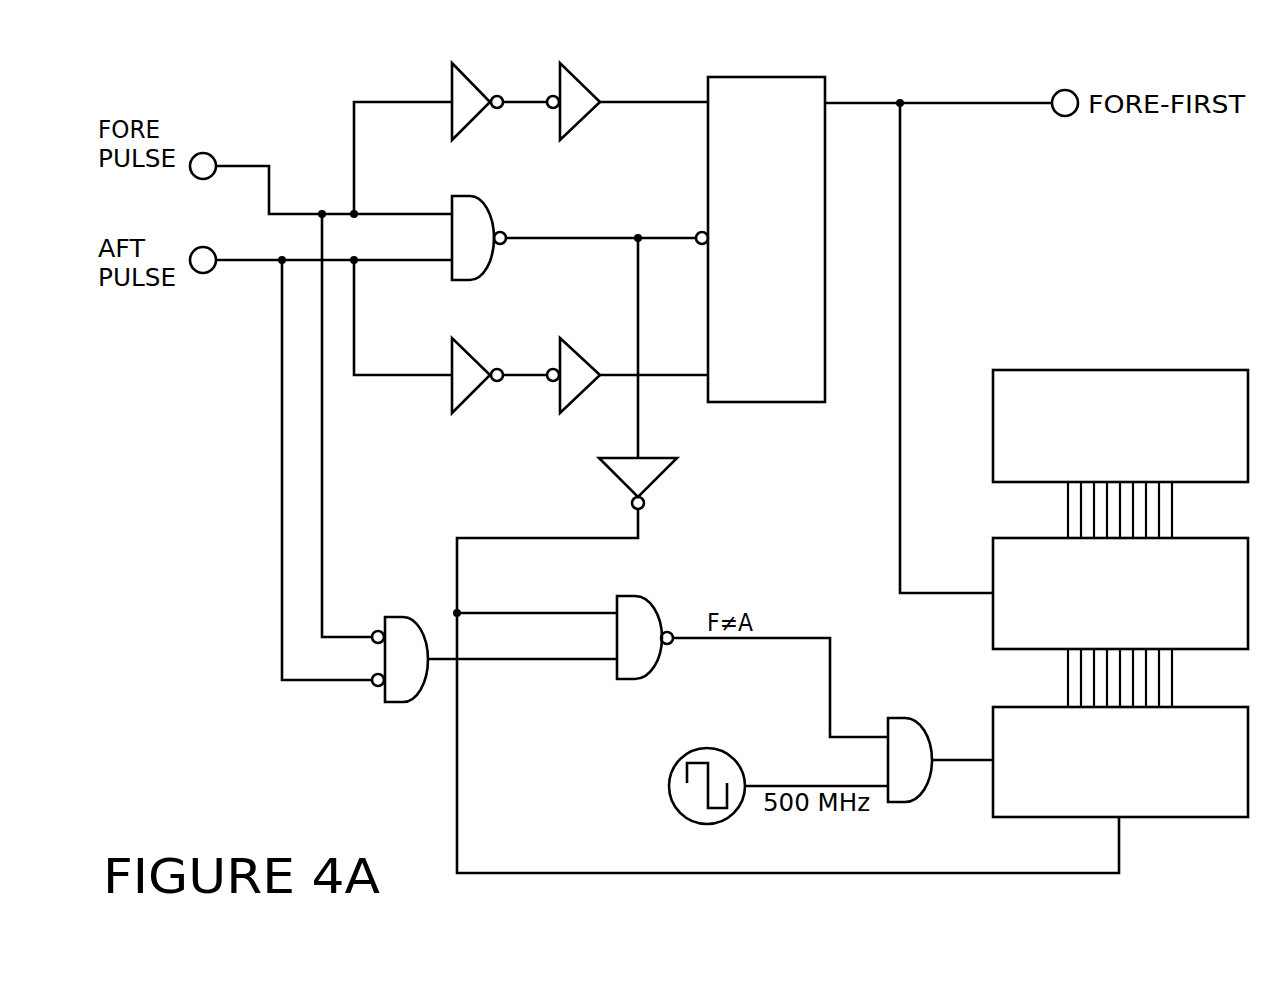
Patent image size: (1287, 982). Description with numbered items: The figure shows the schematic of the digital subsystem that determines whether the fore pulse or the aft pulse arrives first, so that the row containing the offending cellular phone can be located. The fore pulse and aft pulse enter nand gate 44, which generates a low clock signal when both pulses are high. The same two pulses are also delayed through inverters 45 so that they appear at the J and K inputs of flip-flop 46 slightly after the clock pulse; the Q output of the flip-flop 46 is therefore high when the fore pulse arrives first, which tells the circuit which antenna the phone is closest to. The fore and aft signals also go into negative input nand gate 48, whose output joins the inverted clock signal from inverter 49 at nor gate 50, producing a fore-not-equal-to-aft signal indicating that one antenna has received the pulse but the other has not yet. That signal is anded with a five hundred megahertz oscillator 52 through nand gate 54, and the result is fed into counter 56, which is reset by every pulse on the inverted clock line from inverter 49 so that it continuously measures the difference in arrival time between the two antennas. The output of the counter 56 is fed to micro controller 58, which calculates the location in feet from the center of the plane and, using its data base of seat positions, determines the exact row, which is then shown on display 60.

The nand gate 44 is at (522, 219).
The inverters 45 is at (587, 75).
The flip-flop 46 is at (822, 220).
The negative input nand gate 48 is at (357, 701).
The inverter 49 is at (688, 493).
The nor gate 50 is at (683, 621).
The 500 MHz oscillator 52 is at (665, 805).
The nand gate 54 is at (872, 790).
The counter 56 is at (1120, 797).
The micro controller 58 is at (1075, 608).
The display 60 is at (1120, 391).